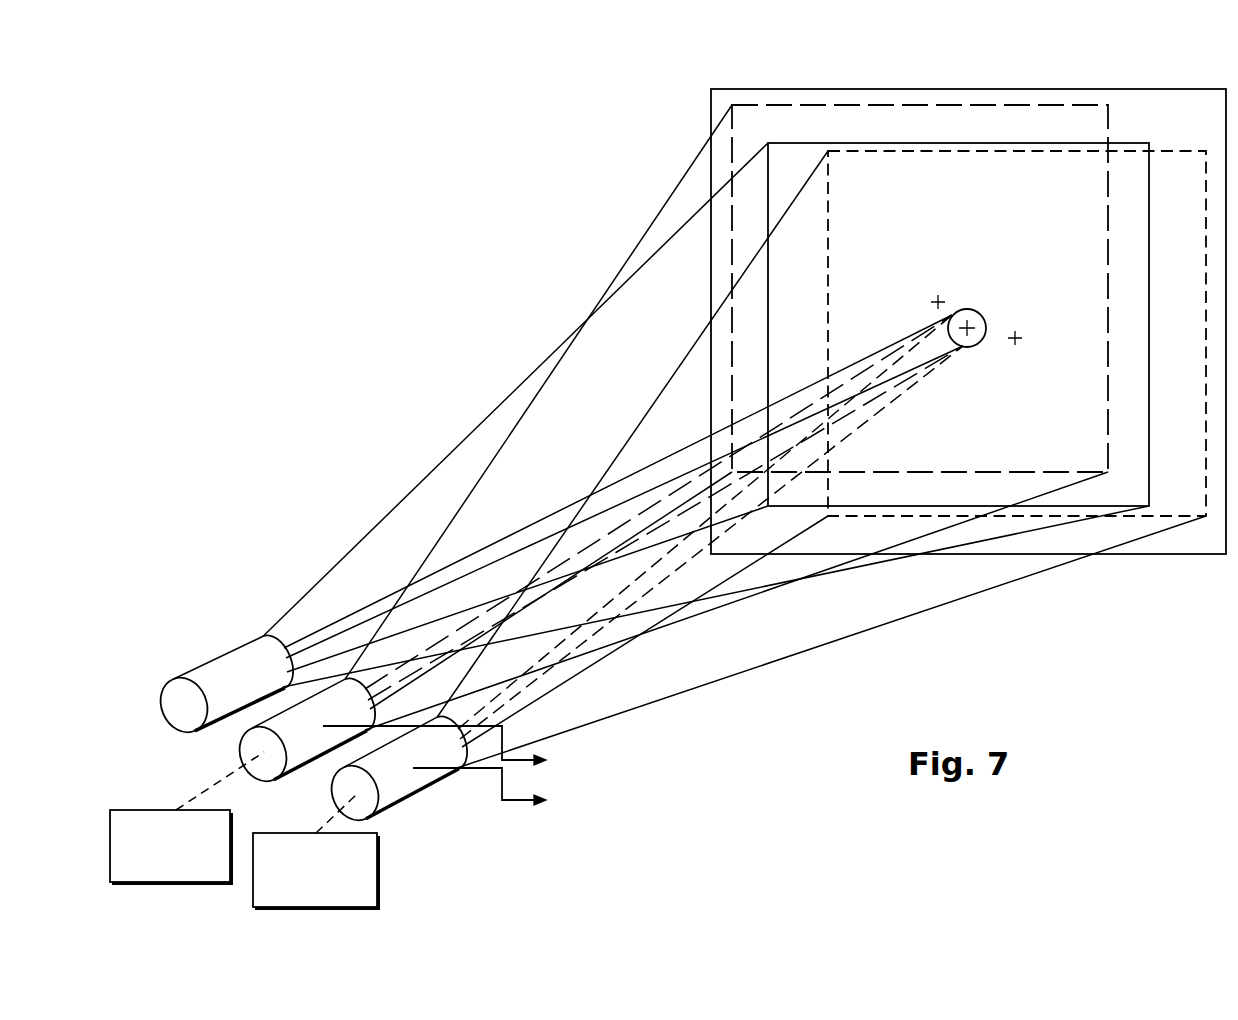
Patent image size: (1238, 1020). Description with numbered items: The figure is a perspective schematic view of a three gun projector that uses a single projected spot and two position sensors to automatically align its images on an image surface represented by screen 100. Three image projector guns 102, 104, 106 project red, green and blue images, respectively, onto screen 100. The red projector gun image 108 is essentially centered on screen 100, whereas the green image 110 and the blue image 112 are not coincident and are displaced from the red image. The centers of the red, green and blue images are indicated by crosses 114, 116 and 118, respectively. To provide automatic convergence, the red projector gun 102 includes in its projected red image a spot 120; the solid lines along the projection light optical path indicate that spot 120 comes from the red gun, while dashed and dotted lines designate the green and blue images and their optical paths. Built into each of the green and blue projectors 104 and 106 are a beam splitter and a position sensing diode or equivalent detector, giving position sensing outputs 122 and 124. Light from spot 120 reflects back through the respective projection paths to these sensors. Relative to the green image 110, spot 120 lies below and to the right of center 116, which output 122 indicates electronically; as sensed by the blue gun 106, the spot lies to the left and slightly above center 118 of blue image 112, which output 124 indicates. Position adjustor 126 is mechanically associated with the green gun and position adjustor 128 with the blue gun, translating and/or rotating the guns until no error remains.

The screen 100 is at (797, 88).
The red projector gun 102 is at (162, 683).
The green projector gun 104 is at (239, 751).
The blue projector gun 106 is at (331, 792).
The red projector gun image 108 is at (857, 140).
The green image 110 is at (938, 103).
The blue image 112 is at (1035, 148).
The cross indicating center of red image 114 is at (971, 326).
The cross indicating center of green image 116 is at (945, 298).
The cross indicating center of blue image 118 is at (1020, 338).
The spot 120 is at (988, 325).
The position sensing output 122 is at (515, 758).
The position sensing output 124 is at (515, 803).
The position adjustor 126 is at (187, 818).
The position adjustor 128 is at (316, 852).